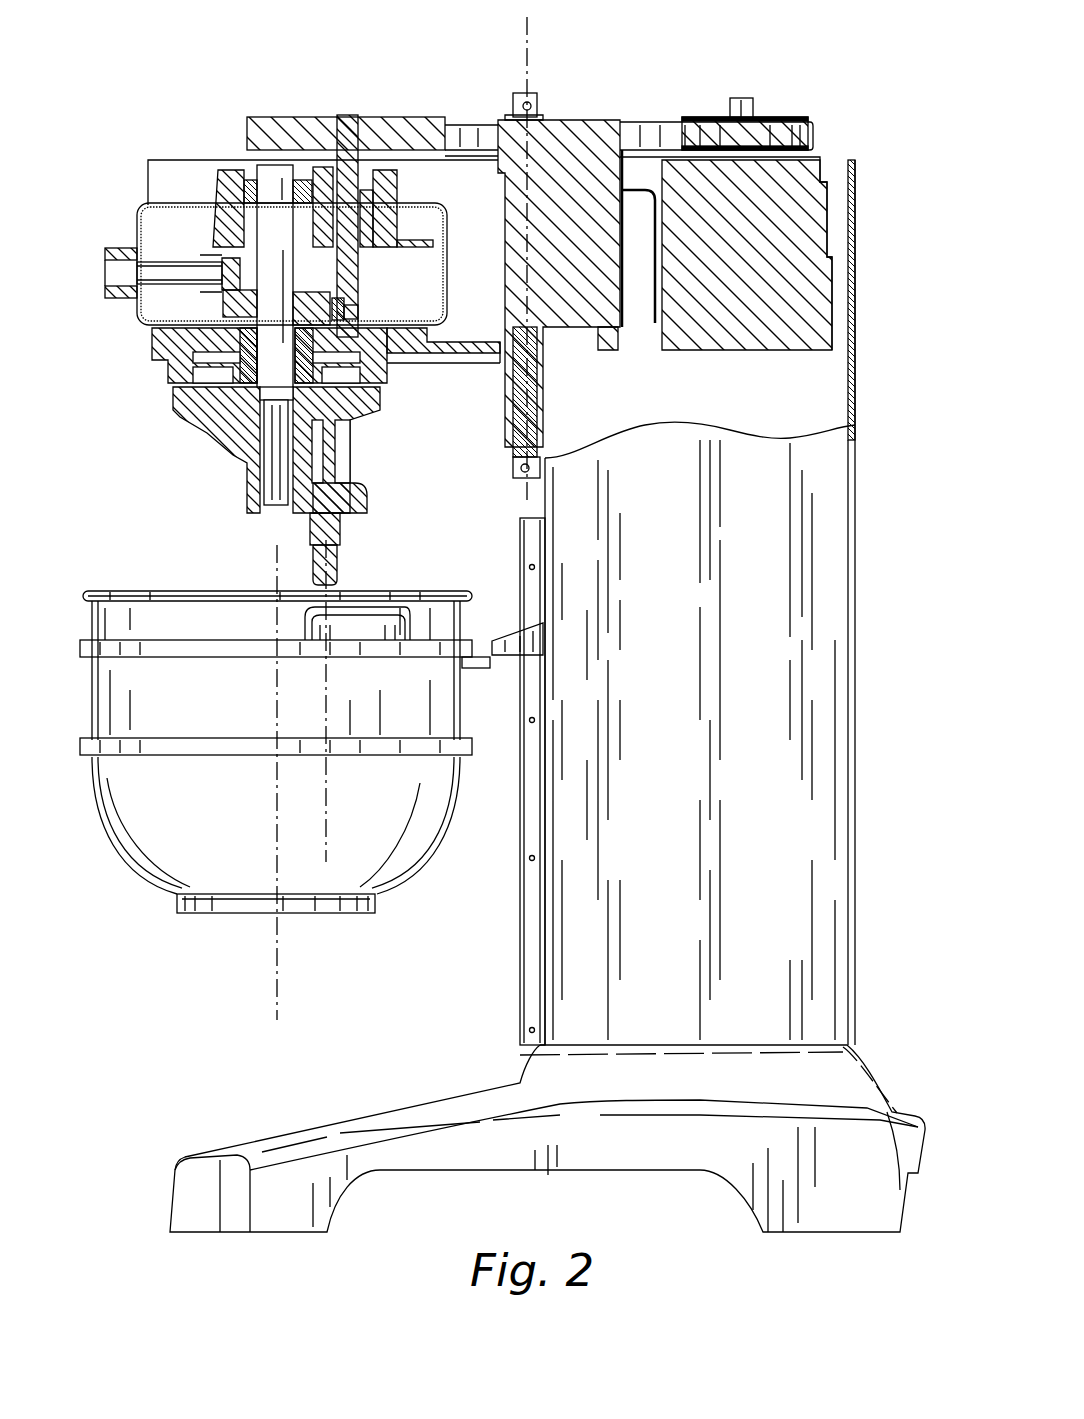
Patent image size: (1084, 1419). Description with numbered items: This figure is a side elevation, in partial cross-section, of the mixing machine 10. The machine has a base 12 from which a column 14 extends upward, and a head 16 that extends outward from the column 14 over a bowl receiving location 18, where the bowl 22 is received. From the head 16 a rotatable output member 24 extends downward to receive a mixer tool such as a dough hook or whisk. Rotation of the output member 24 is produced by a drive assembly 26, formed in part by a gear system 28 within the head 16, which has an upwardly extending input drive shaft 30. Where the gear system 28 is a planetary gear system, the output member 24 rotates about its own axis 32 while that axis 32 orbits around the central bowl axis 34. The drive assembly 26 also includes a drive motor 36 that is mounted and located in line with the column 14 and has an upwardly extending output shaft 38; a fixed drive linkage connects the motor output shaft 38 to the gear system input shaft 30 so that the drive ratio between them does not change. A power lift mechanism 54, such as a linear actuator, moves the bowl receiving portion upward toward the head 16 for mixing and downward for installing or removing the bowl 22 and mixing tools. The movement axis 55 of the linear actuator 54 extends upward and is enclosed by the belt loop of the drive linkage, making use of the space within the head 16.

The mixing machine 10 is at (803, 79).
The base 12 is at (436, 1094).
The column 14 is at (790, 896).
The head 16 is at (152, 171).
The bowl receiving location 18 is at (142, 580).
The bowl 22 is at (158, 845).
The rotatable output member 24 is at (340, 555).
The drive assembly 26 is at (577, 88).
The gear system 28 is at (436, 186).
The input drive shaft 30 is at (352, 117).
The axis 32 is at (327, 804).
The central bowl axis 34 is at (275, 960).
The drive motor 36 is at (752, 277).
The output shaft 38 is at (730, 108).
The power lift mechanism 54 is at (511, 268).
The movement axis 55 is at (530, 40).